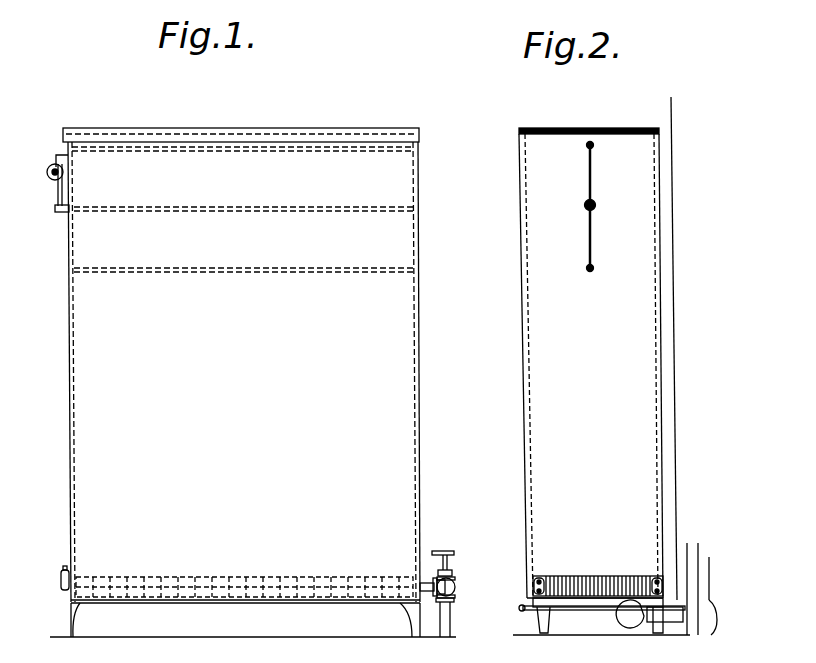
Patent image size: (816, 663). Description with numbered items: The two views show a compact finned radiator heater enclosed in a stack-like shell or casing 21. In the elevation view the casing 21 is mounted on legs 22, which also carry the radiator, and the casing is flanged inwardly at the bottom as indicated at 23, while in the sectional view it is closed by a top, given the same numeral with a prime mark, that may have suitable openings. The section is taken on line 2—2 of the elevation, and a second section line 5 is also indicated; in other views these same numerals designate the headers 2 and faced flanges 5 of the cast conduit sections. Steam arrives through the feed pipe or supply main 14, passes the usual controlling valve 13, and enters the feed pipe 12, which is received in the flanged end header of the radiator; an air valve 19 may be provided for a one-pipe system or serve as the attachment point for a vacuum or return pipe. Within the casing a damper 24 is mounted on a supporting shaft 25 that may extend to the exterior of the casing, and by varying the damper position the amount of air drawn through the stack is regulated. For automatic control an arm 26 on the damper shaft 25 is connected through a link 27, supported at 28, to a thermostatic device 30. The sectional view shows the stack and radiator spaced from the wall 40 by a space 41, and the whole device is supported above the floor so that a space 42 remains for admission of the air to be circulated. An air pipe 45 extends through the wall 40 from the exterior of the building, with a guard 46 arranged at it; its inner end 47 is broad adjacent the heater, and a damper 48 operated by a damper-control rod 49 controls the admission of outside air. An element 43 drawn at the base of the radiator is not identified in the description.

In FIG. 1, the section line 2 is at (252, 123).
In FIG. 1, the faced flange 5 is at (54, 491).
In FIG. 1, the feed pipe 12 is at (421, 582).
In FIG. 1, the controlling valve 13 is at (452, 580).
In FIG. 1, the feed pipe or supply main 14 is at (450, 623).
In FIG. 1, the air valve 19 is at (60, 582).
In FIG. 1, the shell or casing 21 is at (88, 430).
In FIG. 2, the shell or casing 21 is at (526, 431).
In FIG. 1, the legs 22 is at (84, 602).
In FIG. 2, the legs 22 is at (532, 624).
In FIG. 2, the casing flange / top 23 is at (562, 128).
In FIG. 1, the damper 24 is at (90, 258).
In FIG. 2, the damper 24 is at (592, 248).
In FIG. 1, the supporting shaft 25 is at (68, 214).
In FIG. 2, the supporting shaft 25 is at (595, 206).
In FIG. 1, the arm 26 is at (56, 209).
In FIG. 1, the link 27 is at (58, 190).
In FIG. 1, the link support 28 is at (60, 156).
In FIG. 1, the thermostatic device 30 is at (48, 176).
In FIG. 2, the wall 40 is at (678, 452).
In FIG. 2, the space 41 is at (662, 424).
In FIG. 1, the space 42 is at (352, 621).
In FIG. 2, the space 42 is at (548, 621).
In FIG. 1, the heater 43 is at (413, 603).
In FIG. 2, the heater 43 is at (586, 607).
In FIG. 2, the air pipe 45 is at (687, 625).
In FIG. 2, the guard 46 is at (718, 630).
In FIG. 2, the inner end of air pipe 47 is at (632, 622).
In FIG. 2, the damper 48 is at (620, 602).
In FIG. 2, the damper-control rod 49 is at (522, 606).